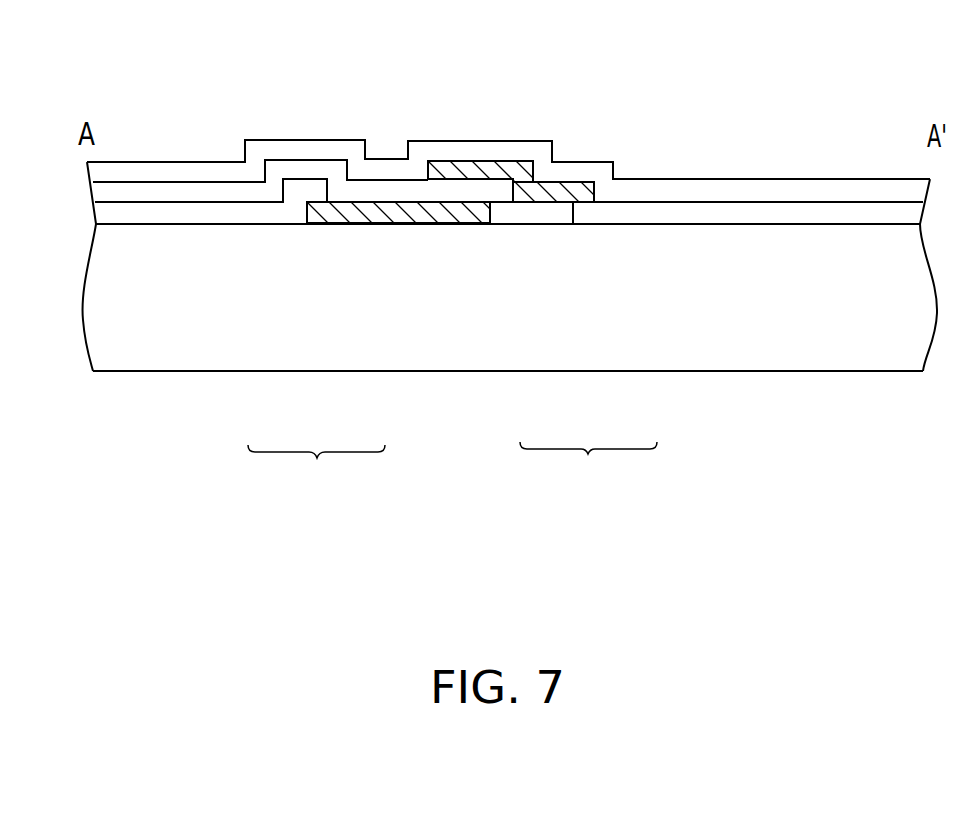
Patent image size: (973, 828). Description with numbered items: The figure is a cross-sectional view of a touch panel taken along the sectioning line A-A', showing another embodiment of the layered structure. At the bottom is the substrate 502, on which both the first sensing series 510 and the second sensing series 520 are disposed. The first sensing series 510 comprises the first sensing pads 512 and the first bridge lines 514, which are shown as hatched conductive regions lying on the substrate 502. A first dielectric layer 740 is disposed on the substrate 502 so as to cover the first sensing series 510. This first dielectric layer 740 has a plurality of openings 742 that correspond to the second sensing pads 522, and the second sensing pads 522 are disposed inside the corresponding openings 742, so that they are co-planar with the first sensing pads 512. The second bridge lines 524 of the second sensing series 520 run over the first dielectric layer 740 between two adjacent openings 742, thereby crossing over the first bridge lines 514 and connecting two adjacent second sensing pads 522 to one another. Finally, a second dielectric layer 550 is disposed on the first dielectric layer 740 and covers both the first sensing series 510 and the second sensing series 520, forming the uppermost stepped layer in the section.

The substrate 502 is at (825, 337).
The first sensing series 510 is at (316, 473).
The first sensing pads 512 is at (273, 209).
The first bridge lines 514 is at (398, 209).
The second sensing series 520 is at (588, 472).
The second sensing pads 522 is at (655, 210).
The second bridge lines 524 is at (537, 190).
The second dielectric layer 550 is at (467, 147).
The first dielectric layer 740 is at (155, 192).
The openings 742 is at (588, 219).